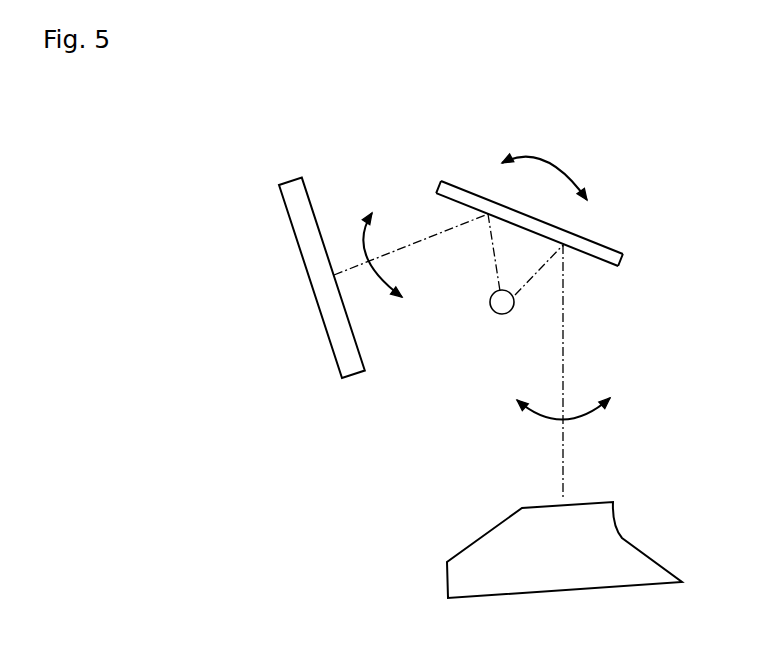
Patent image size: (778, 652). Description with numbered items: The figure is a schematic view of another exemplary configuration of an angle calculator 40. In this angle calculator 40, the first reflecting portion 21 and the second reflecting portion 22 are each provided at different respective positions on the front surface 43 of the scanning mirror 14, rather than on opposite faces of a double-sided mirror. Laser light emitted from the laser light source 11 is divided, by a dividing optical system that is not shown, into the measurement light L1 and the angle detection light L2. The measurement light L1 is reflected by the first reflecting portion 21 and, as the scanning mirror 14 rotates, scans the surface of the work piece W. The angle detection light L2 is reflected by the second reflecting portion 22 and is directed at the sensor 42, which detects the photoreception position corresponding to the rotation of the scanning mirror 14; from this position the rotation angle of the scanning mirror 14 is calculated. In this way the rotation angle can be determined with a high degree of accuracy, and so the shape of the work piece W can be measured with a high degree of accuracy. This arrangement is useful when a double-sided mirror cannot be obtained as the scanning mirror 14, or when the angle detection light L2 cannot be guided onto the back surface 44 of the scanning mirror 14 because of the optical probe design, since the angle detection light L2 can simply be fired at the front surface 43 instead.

The scanning mirror 14 is at (535, 232).
The back surface 44 is at (603, 245).
The front surface 43 is at (600, 259).
The sensor 42 is at (297, 238).
The second reflecting portion 22 is at (486, 219).
The first reflecting portion 21 is at (562, 251).
The laser light source 11 is at (496, 313).
The angle calculator 40 is at (443, 355).
The measurement light L1 is at (528, 282).
The angle detection light L2 is at (496, 268).
The work piece W is at (643, 553).